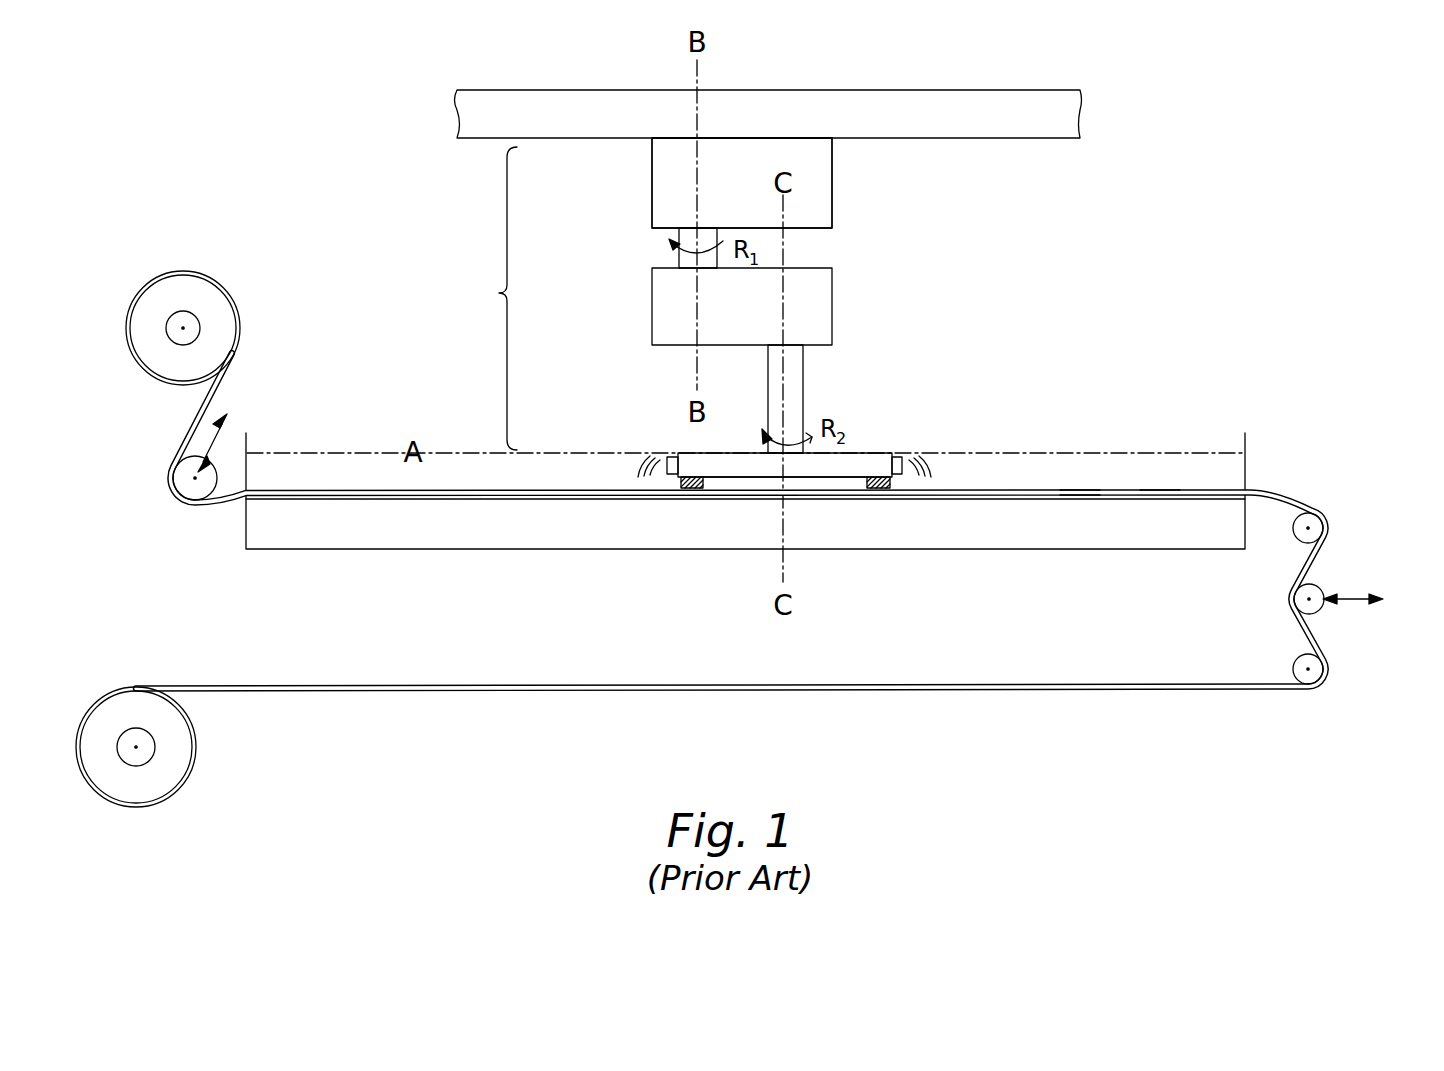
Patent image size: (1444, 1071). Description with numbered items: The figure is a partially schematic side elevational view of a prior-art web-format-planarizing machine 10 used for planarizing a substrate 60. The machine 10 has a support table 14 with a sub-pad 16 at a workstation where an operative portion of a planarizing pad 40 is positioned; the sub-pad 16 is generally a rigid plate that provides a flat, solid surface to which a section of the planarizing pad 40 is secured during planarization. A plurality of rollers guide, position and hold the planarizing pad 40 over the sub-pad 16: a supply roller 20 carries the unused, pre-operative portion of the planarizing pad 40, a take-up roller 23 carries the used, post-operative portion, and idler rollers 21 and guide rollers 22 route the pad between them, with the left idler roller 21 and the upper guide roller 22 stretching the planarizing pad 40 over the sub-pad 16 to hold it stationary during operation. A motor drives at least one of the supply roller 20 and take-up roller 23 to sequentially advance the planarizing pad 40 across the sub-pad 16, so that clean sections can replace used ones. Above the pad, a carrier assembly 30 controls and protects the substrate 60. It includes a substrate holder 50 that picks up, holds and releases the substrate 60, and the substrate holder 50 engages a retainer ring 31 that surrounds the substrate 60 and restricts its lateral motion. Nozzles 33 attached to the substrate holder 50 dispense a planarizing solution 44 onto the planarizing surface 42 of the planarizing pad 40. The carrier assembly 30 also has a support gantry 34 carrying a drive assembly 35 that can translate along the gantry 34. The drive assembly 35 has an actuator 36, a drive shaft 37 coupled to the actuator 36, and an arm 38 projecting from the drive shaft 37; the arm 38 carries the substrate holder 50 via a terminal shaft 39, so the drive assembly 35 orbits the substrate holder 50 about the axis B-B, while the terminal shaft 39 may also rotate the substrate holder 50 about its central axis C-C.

The web-format-planarizing machine 10 is at (1177, 290).
The support table 14 is at (612, 535).
The sub-pad 16 is at (246, 498).
The supply roller 20 is at (170, 338).
The idler roller 21 is at (190, 487).
The guide roller 22 is at (1323, 529).
The take-up roller 23 is at (122, 755).
The carrier assembly 30 is at (858, 199).
The retainer ring 31 is at (888, 486).
The nozzles 33 is at (673, 455).
The support gantry 34 is at (765, 100).
The drive assembly 35 is at (488, 298).
The actuator 36 is at (656, 192).
The drive shaft 37 is at (680, 237).
The arm 38 is at (832, 297).
The terminal shaft 39 is at (803, 395).
The planarizing pad 40 is at (1077, 489).
The planarizing surface 42 is at (1143, 490).
The planarizing solution 44 is at (645, 469).
The substrate holder 50 is at (887, 452).
The substrate 60 is at (835, 486).